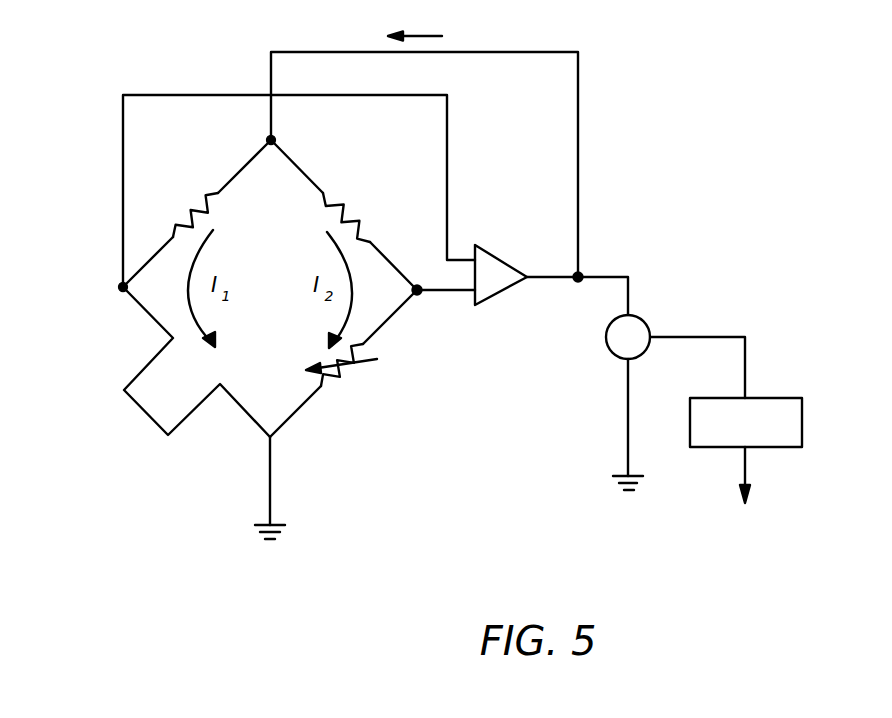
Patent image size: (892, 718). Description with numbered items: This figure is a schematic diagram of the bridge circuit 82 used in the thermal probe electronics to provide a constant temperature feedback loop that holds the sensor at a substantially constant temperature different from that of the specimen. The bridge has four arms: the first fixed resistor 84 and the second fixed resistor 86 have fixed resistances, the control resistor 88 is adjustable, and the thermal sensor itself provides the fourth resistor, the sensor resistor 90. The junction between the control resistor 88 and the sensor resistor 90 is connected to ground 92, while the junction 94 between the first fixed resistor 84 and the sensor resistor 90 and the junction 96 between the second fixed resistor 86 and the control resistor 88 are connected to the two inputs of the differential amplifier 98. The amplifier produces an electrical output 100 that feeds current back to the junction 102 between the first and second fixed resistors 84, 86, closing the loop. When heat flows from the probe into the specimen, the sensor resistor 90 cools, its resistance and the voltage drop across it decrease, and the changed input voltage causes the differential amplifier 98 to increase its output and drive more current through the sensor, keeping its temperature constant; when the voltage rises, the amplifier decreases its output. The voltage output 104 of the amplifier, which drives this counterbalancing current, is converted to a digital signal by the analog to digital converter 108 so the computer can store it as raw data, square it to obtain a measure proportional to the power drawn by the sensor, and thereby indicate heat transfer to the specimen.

The bridge circuit 82 is at (669, 196).
The resistor R1 84 is at (213, 196).
The resistor R2 86 is at (347, 212).
The control resistor R3 88 is at (329, 375).
The sensor R4 90 is at (148, 420).
The ground 92 is at (287, 533).
The junction 94 is at (121, 286).
The junction 96 is at (419, 292).
The differential amplifier 98 is at (490, 266).
The electrical output 100 is at (538, 278).
The junction 102 is at (274, 139).
The voltage output 104 is at (649, 318).
The analog to digital converter 108 is at (782, 405).